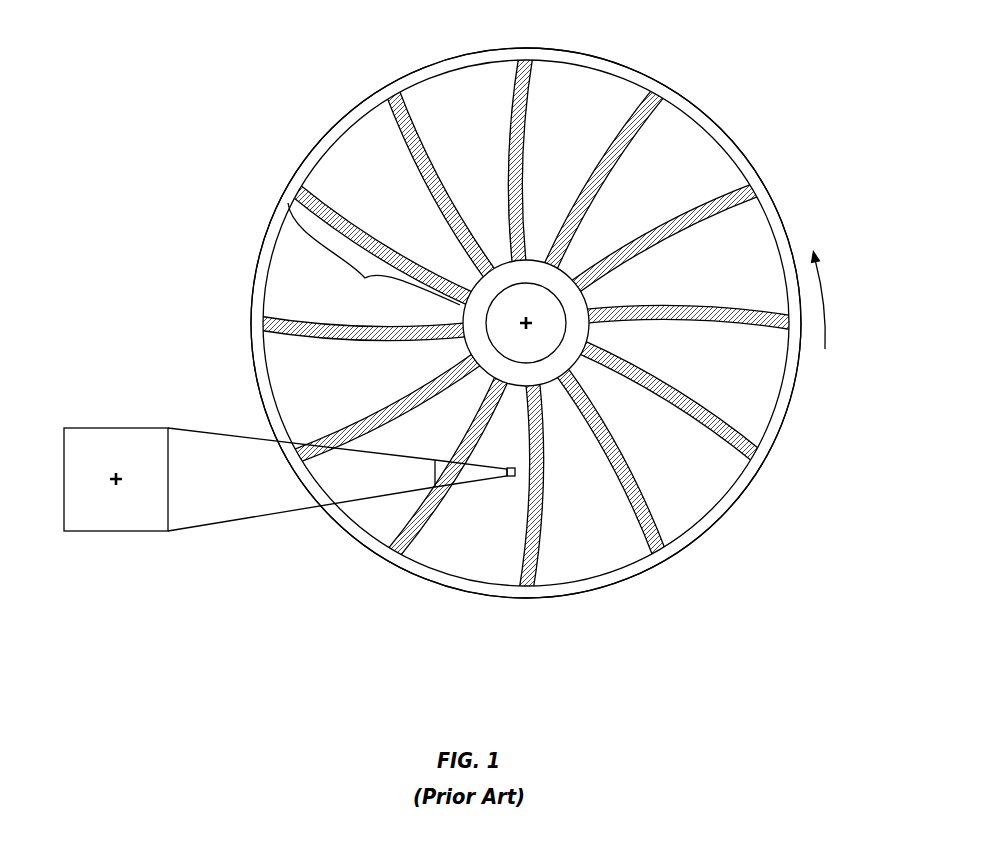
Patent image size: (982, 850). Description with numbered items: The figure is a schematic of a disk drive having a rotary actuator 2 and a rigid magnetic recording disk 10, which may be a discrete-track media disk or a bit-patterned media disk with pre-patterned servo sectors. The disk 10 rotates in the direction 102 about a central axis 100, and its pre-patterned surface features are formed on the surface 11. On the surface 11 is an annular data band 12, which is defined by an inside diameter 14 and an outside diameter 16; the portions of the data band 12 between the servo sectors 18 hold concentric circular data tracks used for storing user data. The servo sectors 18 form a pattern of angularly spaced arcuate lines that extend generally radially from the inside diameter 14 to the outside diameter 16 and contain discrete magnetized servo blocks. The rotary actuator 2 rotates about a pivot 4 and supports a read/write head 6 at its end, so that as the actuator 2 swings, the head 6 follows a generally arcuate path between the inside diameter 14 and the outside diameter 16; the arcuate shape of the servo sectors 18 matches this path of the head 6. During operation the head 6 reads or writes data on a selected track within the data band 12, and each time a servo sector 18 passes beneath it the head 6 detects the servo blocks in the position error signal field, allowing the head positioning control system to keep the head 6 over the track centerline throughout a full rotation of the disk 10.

The rotary actuator 2 is at (98, 532).
The pivot 4 is at (114, 472).
The read/write head 6 is at (508, 478).
The rigid magnetic recording disk 10 is at (763, 168).
The surface 11 is at (697, 152).
The annular data band 12 is at (374, 255).
The inside diameter 14 is at (567, 272).
The outside diameter 16 is at (584, 62).
The servo sectors 18 is at (521, 60).
The central axis 100 is at (534, 327).
The direction of rotation 102 is at (821, 294).